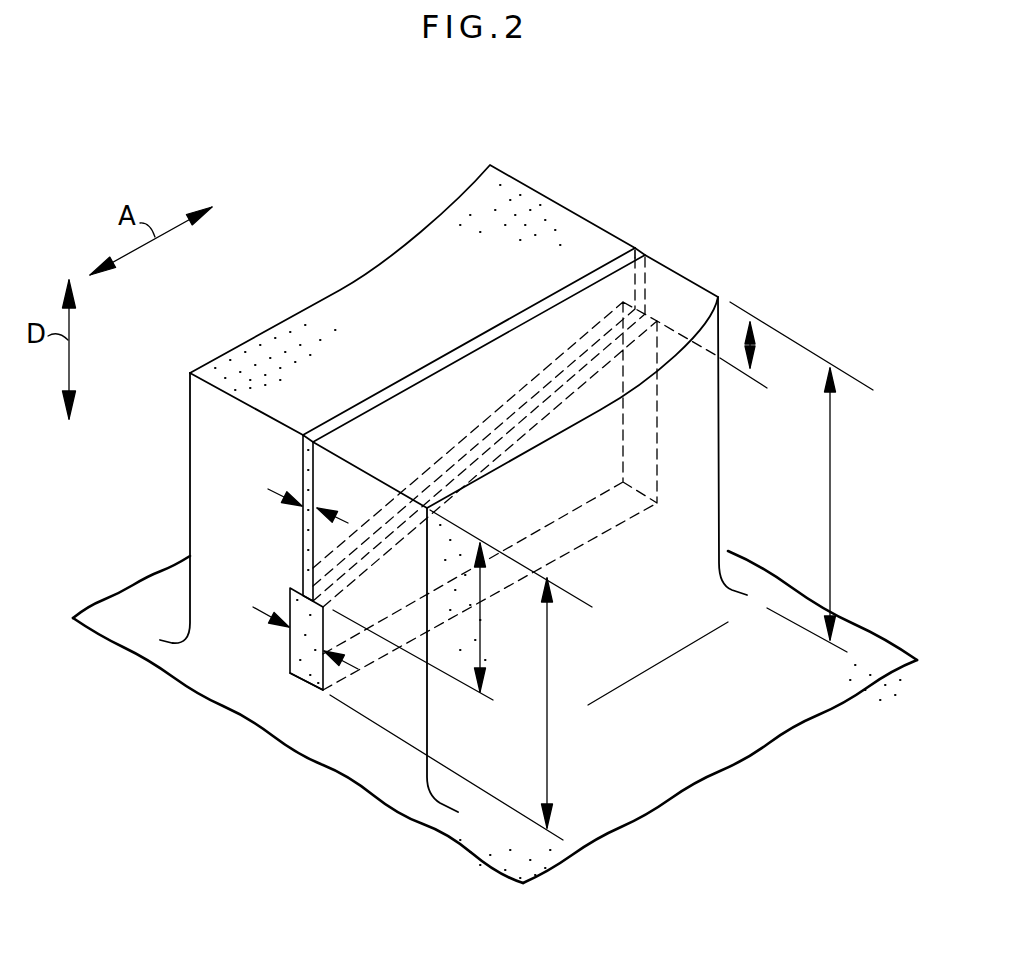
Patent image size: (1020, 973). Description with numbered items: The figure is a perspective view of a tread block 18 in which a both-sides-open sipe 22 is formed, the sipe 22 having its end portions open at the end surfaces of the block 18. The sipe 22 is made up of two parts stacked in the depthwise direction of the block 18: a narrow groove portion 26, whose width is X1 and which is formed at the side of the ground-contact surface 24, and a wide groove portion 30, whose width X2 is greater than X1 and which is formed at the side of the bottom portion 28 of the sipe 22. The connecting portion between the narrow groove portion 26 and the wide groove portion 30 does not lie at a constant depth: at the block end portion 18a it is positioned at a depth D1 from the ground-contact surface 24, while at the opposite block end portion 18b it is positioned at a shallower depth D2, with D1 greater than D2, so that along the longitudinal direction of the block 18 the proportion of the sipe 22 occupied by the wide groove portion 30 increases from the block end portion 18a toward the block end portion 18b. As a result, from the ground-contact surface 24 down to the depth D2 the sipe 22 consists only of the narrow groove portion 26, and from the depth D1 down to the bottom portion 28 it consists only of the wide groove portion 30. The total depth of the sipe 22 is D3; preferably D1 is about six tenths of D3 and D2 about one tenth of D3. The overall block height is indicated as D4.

The block 18 is at (256, 202).
The block end portion 18a is at (192, 508).
The block end portion 18b is at (720, 407).
The sipe 22 is at (549, 296).
The ground-contact surface 24 is at (363, 297).
The narrow groove portion 26 is at (317, 472).
The bottom portion 28 is at (308, 676).
The wide groove portion 30 is at (307, 608).
The width of narrow groove portion X1 is at (303, 522).
The width of wide groove portion X2 is at (305, 640).
The depth at block end portion 18a D1 is at (480, 596).
The depth at block end portion 18b D2 is at (750, 347).
The total depth of sipe D3 is at (547, 637).
The block height D4 is at (830, 487).